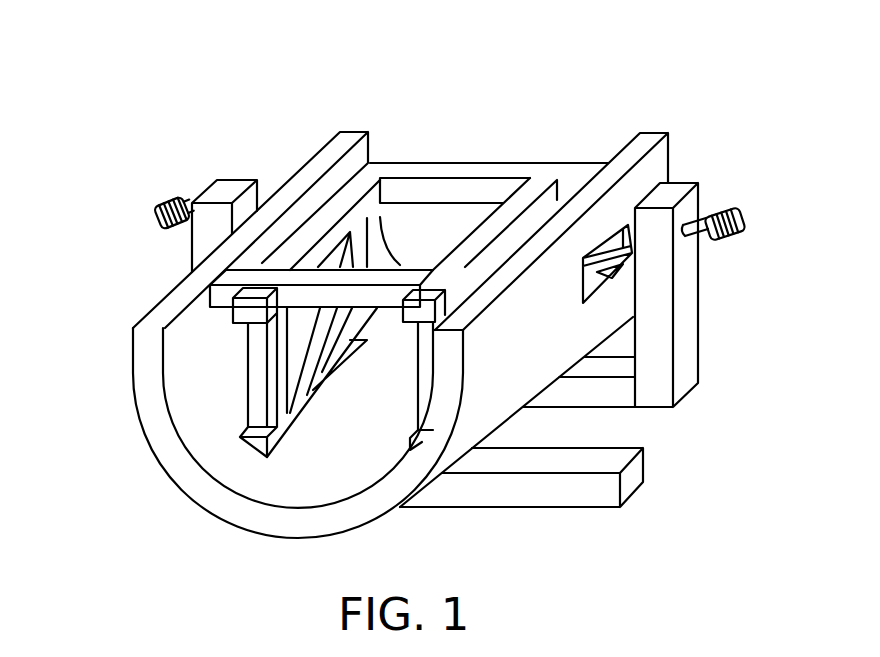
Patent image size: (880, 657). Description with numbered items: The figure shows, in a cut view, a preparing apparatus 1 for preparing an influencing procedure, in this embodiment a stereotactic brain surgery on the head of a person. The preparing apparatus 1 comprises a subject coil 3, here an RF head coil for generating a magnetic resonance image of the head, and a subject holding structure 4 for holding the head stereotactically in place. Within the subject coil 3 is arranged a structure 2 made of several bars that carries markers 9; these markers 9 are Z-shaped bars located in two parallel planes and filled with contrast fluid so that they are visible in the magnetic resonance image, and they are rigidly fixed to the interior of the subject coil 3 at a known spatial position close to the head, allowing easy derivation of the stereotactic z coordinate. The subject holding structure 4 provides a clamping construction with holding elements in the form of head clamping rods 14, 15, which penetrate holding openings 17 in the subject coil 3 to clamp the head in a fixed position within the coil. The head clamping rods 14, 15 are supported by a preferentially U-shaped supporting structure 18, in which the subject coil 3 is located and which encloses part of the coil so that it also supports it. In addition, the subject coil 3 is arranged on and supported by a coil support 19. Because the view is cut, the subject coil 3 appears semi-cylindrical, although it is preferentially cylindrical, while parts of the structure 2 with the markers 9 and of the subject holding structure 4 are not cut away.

The preparing apparatus 1 is at (628, 89).
The structure 2 is at (475, 149).
The subject coil 3 is at (201, 488).
The subject holding structure 4 is at (217, 188).
The markers 9 is at (346, 262).
The head clamping rod 14 is at (157, 201).
The head clamping rod 15 is at (722, 206).
The holding openings 17 is at (612, 272).
The supporting structure 18 is at (690, 366).
The coil support 19 is at (640, 488).